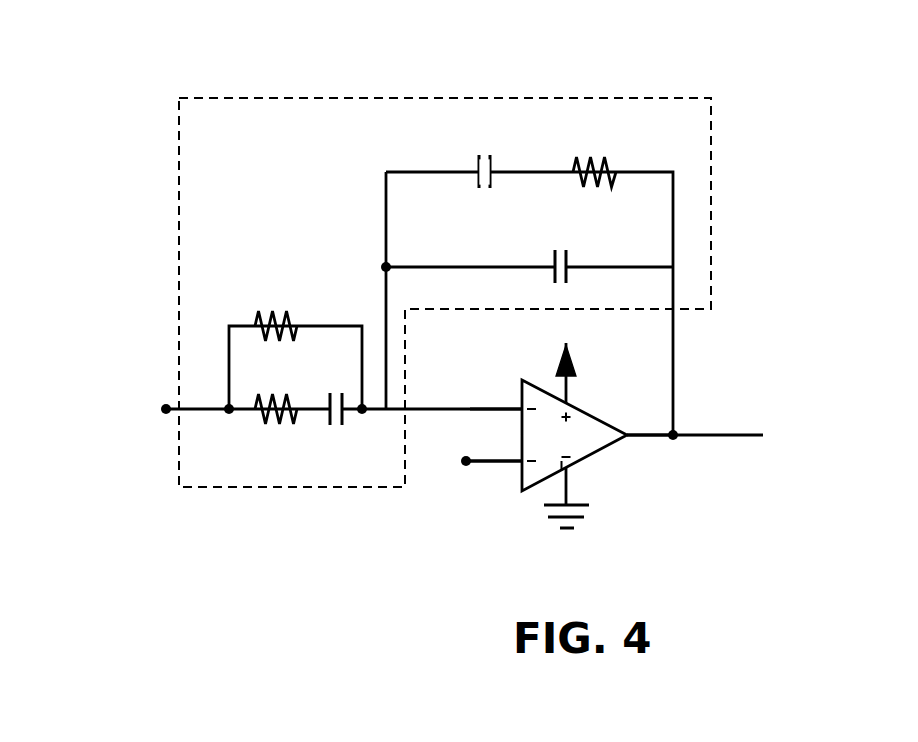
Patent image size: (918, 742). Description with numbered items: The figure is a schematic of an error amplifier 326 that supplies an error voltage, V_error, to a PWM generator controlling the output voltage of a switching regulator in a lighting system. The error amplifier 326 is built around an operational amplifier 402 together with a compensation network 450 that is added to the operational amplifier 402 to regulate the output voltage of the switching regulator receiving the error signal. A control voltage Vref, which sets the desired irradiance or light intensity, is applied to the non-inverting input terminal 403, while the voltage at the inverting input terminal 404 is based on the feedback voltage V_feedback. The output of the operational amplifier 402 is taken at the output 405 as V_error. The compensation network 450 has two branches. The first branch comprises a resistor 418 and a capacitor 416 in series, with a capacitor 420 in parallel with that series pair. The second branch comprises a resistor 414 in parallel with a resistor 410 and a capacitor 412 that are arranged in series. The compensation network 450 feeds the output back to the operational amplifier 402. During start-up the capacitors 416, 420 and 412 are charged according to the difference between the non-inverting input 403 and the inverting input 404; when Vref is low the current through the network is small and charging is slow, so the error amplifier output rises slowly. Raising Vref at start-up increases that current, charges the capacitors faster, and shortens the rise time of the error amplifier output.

The error amplifier 326 is at (240, 44).
The compensation network 450 is at (665, 98).
The capacitor 416 is at (478, 158).
The resistor 418 is at (585, 158).
The capacitor 420 is at (555, 253).
The resistor 414 is at (262, 312).
The resistor 410 is at (282, 425).
The capacitor 412 is at (338, 428).
The operational amplifier 402 is at (590, 408).
The non-inverting input terminal 403 is at (518, 462).
The inverting input terminal 404 is at (520, 405).
The output 405 is at (625, 438).